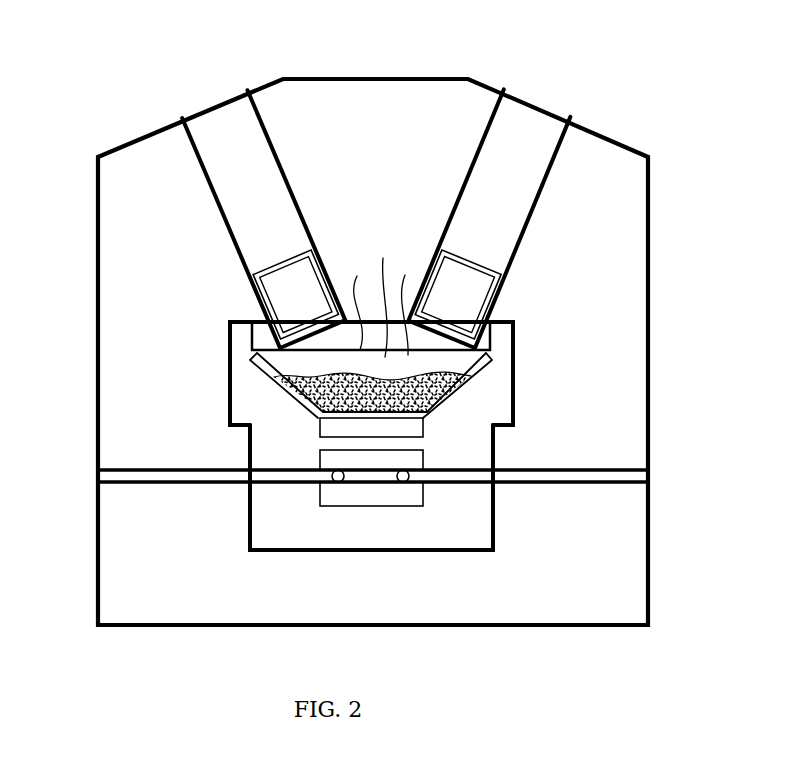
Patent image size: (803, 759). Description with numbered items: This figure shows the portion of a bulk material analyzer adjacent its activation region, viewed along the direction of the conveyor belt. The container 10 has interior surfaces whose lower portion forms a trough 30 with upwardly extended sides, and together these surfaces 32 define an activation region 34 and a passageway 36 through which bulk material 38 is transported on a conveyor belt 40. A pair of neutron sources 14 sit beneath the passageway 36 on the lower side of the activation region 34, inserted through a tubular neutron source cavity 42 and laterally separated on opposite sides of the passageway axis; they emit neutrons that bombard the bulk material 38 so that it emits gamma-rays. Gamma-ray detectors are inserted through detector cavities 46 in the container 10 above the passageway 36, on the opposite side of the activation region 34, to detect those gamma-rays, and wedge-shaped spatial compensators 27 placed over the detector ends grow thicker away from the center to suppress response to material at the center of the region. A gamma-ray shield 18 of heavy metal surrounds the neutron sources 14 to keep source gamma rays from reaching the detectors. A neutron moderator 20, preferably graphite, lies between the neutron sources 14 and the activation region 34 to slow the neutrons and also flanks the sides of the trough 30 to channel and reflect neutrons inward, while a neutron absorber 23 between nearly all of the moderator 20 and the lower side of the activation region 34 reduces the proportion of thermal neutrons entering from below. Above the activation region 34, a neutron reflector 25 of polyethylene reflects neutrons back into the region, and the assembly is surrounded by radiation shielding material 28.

The container 10 is at (386, 78).
The neutron sources 14 is at (343, 486).
The gamma-ray shield 18 is at (425, 456).
The neutron moderator 20 is at (272, 442).
The neutron absorber 23 is at (425, 434).
The neutron reflector 25 is at (515, 321).
The spatial compensators 27 is at (318, 330).
The radiation shielding material 28 is at (437, 98).
The trough 30 is at (496, 378).
The interior surfaces 32 is at (355, 300).
The activation region 34 is at (387, 295).
The passageway 36 is at (407, 302).
The bulk material 38 is at (392, 385).
The conveyor belt 40 is at (470, 375).
The neutron source cavity 42 is at (633, 467).
The detector cavities 46 is at (372, 212).